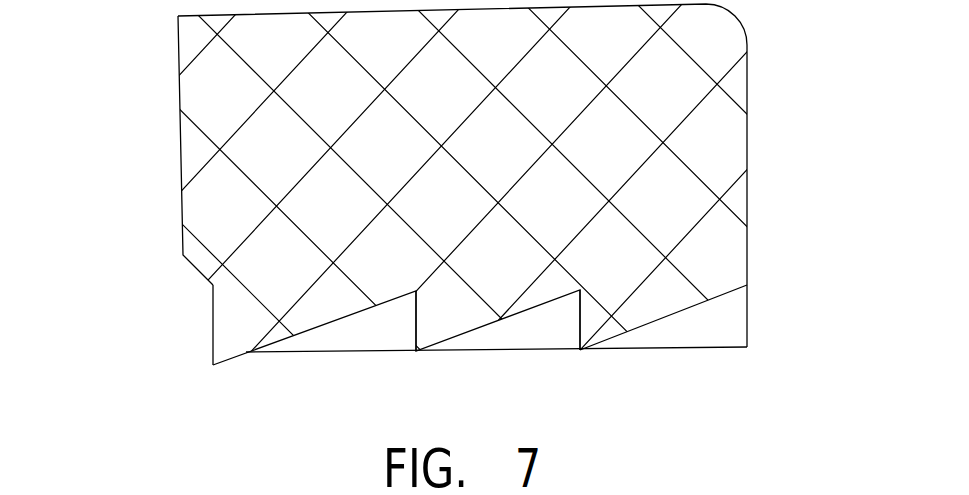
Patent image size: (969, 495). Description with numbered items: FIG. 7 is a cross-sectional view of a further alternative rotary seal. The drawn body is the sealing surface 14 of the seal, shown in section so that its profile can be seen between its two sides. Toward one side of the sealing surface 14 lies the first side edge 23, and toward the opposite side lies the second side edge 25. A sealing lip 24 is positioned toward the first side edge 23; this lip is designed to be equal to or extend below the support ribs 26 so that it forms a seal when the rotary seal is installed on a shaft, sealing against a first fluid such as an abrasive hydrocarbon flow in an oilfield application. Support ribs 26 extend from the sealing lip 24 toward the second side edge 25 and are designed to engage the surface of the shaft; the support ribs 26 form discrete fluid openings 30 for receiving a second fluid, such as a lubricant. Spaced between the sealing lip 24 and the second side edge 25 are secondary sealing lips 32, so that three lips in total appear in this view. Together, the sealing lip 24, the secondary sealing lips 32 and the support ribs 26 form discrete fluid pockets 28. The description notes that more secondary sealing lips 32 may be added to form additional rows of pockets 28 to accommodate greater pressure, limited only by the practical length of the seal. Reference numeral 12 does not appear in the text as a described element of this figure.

The panel body 12 is at (223, 78).
The sealing surface 14 is at (280, 409).
The first side edge 23 is at (182, 196).
The sealing lip 24 is at (213, 343).
The second side edge 25 is at (748, 198).
The support ribs 26 is at (748, 315).
The fluid pockets 28 is at (370, 332).
The fluid openings 30 is at (711, 328).
The secondary sealing lips 32 is at (417, 352).